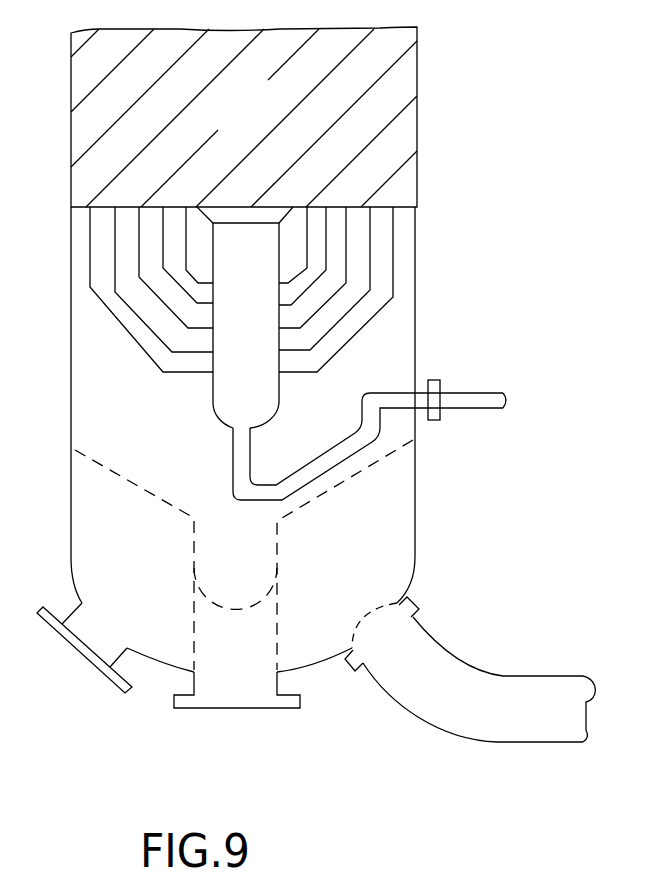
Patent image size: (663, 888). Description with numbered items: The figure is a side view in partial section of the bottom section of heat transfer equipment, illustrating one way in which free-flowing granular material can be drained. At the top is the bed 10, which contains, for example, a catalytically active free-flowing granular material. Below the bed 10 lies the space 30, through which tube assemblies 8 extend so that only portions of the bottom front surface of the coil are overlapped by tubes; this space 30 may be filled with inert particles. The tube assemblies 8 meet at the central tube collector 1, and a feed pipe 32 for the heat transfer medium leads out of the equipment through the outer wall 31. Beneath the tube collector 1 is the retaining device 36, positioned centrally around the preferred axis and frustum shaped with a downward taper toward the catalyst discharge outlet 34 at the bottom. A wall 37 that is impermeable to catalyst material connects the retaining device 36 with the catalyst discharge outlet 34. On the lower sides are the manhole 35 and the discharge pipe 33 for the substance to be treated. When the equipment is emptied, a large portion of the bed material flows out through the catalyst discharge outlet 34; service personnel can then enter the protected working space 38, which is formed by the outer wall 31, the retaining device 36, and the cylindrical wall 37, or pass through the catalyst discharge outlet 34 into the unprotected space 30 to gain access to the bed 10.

The tube collector 1 is at (257, 332).
The tube assemblies 8 is at (92, 270).
The bed 10 is at (258, 117).
The space 30 is at (133, 425).
The outer wall 31 is at (417, 171).
The feed pipe 32 is at (486, 409).
The discharge pipe 33 is at (497, 692).
The catalyst discharge outlet 34 is at (250, 698).
The manhole 35 is at (100, 655).
The retaining device 36 is at (161, 496).
The wall 37 is at (197, 557).
The protected working space 38 is at (362, 628).